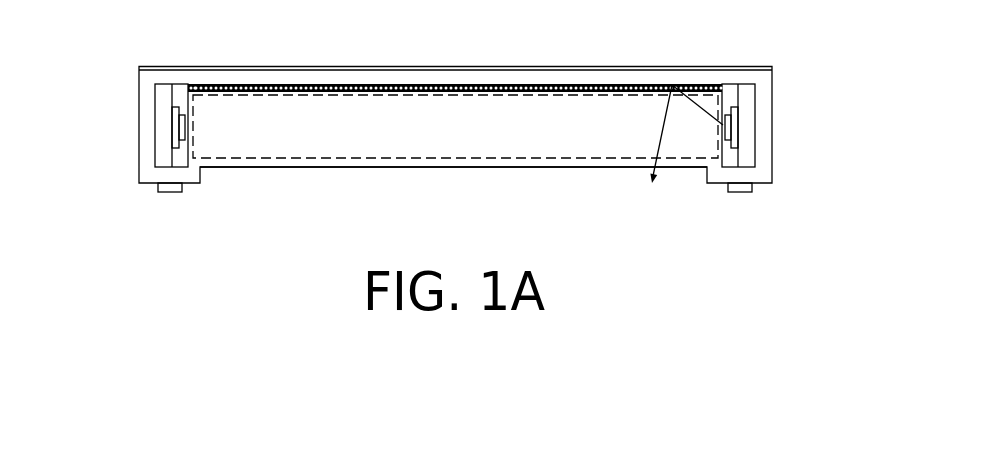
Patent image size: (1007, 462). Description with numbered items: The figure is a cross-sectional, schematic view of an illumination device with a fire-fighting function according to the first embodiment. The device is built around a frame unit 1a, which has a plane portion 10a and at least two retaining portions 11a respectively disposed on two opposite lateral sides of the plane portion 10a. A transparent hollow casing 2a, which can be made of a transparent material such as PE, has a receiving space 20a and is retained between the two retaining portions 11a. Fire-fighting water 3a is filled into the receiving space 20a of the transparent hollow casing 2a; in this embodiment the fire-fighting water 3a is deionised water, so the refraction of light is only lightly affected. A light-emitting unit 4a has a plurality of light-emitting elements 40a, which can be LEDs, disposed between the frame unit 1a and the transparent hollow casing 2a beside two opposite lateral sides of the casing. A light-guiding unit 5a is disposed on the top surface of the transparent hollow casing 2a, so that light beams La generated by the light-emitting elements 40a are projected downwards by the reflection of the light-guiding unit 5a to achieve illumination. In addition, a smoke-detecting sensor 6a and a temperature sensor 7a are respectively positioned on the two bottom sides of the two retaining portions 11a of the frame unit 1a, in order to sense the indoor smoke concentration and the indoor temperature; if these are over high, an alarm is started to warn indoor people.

The frame unit 1a is at (762, 72).
The transparent hollow casing 2a is at (698, 177).
The fire-fighting water 3a is at (628, 150).
The light-emitting unit 4a is at (741, 112).
The light-guiding unit 5a is at (519, 84).
The smoke-detecting sensor 6a is at (194, 201).
The temperature sensor 7a is at (764, 194).
The plane portion 10a is at (642, 74).
The retaining portions 11a is at (145, 132).
The receiving space 20a is at (671, 160).
The light-emitting elements 40a is at (180, 135).
The light beams La is at (702, 95).